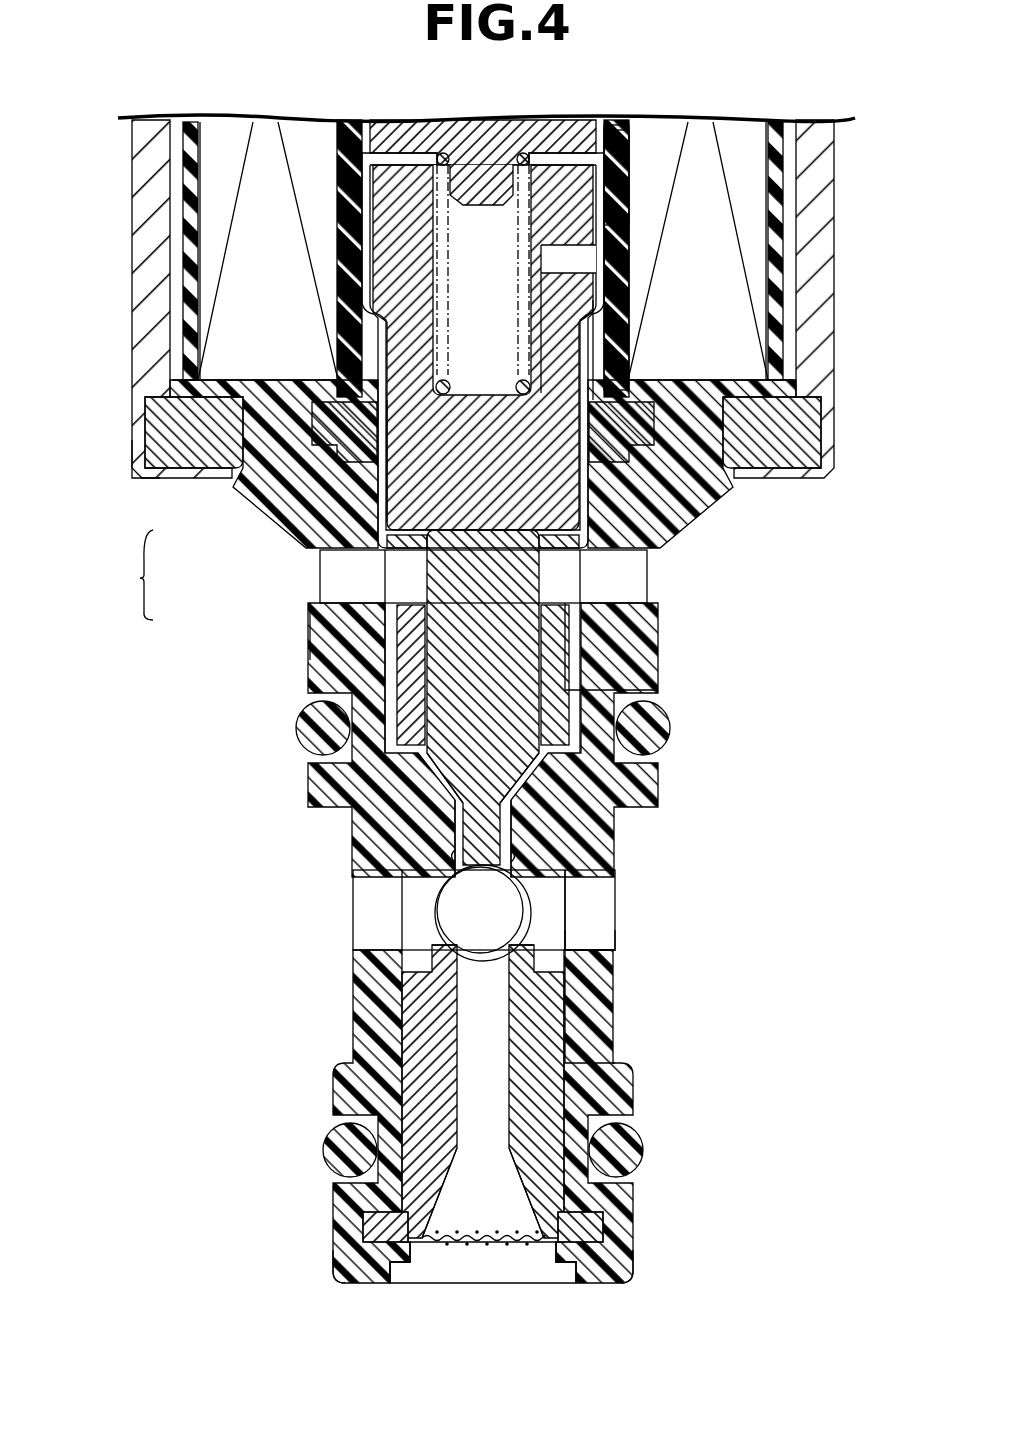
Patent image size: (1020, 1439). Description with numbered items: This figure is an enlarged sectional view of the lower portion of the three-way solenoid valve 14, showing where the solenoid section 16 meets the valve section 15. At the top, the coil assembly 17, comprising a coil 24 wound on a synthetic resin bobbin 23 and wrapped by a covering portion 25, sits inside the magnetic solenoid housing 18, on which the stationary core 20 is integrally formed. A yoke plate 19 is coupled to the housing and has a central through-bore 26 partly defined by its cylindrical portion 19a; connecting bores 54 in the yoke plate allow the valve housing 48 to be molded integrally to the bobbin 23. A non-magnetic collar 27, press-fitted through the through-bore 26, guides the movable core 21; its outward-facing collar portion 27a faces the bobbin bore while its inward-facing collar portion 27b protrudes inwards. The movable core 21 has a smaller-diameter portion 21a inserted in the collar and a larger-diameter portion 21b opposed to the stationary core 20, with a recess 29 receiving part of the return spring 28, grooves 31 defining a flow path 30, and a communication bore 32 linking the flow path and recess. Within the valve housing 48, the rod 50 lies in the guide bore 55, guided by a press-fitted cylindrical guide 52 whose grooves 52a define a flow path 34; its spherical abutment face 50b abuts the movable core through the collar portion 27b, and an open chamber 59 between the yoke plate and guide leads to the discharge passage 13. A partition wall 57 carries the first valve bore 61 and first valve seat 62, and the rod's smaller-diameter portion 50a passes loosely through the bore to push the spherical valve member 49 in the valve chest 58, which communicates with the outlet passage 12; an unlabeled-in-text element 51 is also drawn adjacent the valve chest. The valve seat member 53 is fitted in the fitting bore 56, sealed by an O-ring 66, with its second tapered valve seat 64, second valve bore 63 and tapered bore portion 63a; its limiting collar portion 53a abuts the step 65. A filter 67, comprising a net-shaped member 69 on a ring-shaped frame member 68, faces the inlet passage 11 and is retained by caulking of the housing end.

The inlet passage 11 is at (490, 1248).
The outlet passage 12 is at (596, 908).
The discharge passage 13 is at (640, 578).
The three-way solenoid valve 14 is at (127, 575).
The valve section 15 is at (303, 634).
The solenoid section 16 is at (152, 482).
The coil assembly 17 is at (800, 350).
The solenoid housing 18 is at (818, 218).
The yoke plate 19 is at (742, 410).
The cylindrical portion 19a is at (315, 508).
The stationary core 20 is at (567, 170).
The movable core 21 is at (375, 245).
The smaller-diameter portion 21a is at (655, 540).
The larger-diameter portion 21b is at (615, 135).
The bobbin 23 is at (355, 122).
The coil 24 is at (740, 150).
The covering portion 25 is at (782, 270).
The through-bore 26 is at (625, 345).
The collar 27 is at (447, 341).
The outward-facing collar portion 27a is at (616, 292).
The inward-facing collar portion 27b is at (418, 497).
The return spring 28 is at (490, 130).
The recess 29 is at (440, 154).
The flow path 30 is at (602, 213).
The grooves 31 is at (628, 182).
The communication bore 32 is at (545, 262).
The flow path 34 is at (577, 628).
The valve housing 48 is at (360, 998).
The spherical valve member 49 is at (555, 897).
The rod 50 is at (505, 637).
The smaller-diameter portion 50a is at (512, 842).
The spherical abutment face 50b is at (495, 515).
The ring lower portion 51 is at (612, 962).
The guide 52 is at (568, 668).
The grooves 52a is at (668, 725).
The valve seat member 53 is at (552, 1118).
The limiting collar portion 53a is at (380, 1225).
The connecting bores 54 is at (265, 430).
The guide bore 55 is at (396, 660).
The fitting bore 56 is at (582, 1025).
The partition wall 57 is at (531, 803).
The valve chest 58 is at (415, 905).
The open chamber 59 is at (405, 585).
The first valve bore 61 is at (460, 857).
The first valve seat 62 is at (458, 880).
The second valve bore 63 is at (503, 1120).
The tapered bore portion 63a is at (540, 1255).
The second tapered valve seat 64 is at (478, 958).
The step 65 is at (602, 1230).
The O-ring 66 is at (600, 1070).
The filter 67 is at (450, 1264).
The frame member 68 is at (600, 1253).
The net-shaped member 69 is at (428, 1252).